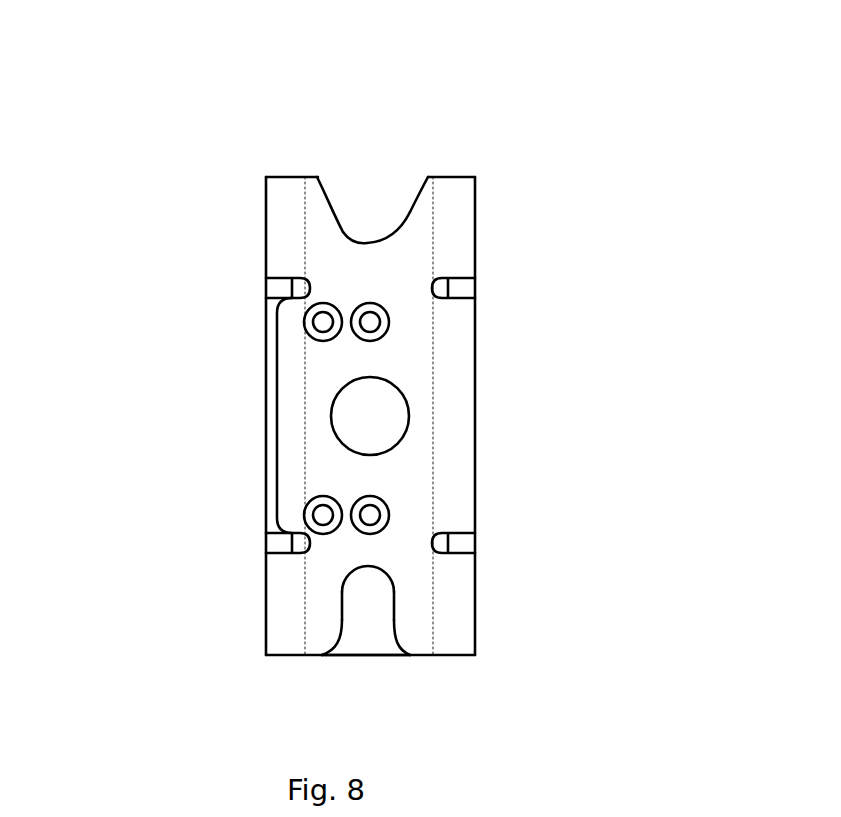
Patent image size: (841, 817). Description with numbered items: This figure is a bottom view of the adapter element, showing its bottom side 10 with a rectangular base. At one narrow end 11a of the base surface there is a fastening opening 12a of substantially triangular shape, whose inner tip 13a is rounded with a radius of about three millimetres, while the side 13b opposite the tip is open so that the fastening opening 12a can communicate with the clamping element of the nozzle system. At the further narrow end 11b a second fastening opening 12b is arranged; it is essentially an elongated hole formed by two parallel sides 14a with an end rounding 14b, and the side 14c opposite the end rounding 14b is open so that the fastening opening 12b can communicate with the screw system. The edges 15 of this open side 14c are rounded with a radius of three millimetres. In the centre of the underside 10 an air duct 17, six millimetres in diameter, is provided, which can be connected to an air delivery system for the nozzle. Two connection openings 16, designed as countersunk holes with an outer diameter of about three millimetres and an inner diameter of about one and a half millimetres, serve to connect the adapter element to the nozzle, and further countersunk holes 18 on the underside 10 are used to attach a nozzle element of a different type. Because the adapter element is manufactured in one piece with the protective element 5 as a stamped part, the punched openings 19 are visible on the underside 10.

The protective element 5 is at (210, 185).
The bottom side 10 is at (427, 242).
The narrow end 11a is at (437, 177).
The further narrow end 11b is at (463, 656).
The fastening opening 12a is at (337, 217).
The fastening opening 12b is at (393, 580).
The inner tip 13a is at (362, 240).
The side opposite the tip 13b is at (377, 177).
The parallel sides 14a is at (343, 608).
The end rounding 14b is at (352, 564).
The open side 14c is at (357, 657).
The edges 15 is at (397, 656).
The connection openings 16 is at (309, 336).
The air duct 17 is at (409, 425).
The countersunk holes 18 is at (389, 324).
The punched openings 19 is at (266, 297).